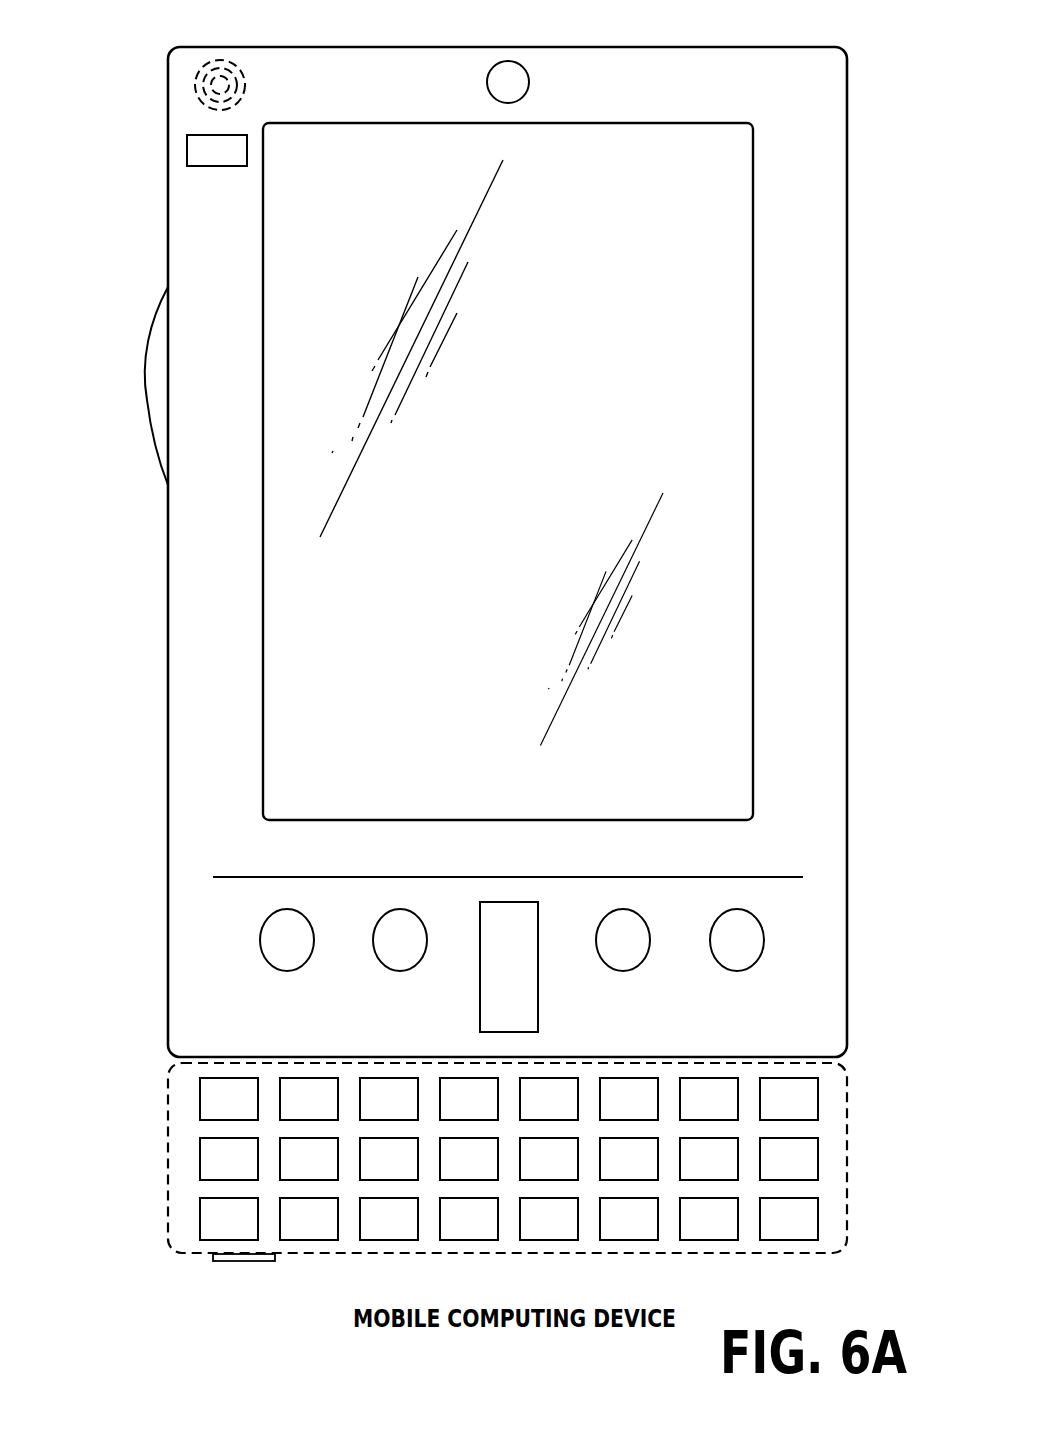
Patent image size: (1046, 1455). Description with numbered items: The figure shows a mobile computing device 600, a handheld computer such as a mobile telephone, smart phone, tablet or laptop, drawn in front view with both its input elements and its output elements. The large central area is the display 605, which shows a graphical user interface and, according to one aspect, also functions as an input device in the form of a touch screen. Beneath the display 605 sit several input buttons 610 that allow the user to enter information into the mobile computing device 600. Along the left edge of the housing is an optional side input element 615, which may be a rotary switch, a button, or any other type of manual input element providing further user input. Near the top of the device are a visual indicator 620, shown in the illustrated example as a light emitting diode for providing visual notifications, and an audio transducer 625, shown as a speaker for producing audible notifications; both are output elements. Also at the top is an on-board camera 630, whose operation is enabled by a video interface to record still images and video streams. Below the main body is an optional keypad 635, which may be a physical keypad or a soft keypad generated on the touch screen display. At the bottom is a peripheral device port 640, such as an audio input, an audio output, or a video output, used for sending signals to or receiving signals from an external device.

The mobile computing device 600 is at (812, 47).
The display 605 is at (287, 650).
The input buttons 610 is at (260, 1003).
The side input element 615 is at (147, 386).
The visual indicator 620 is at (187, 152).
The audio transducer 625 is at (192, 87).
The on-board camera 630 is at (508, 61).
The keypad 635 is at (176, 1158).
The peripheral device port 640 is at (222, 1261).